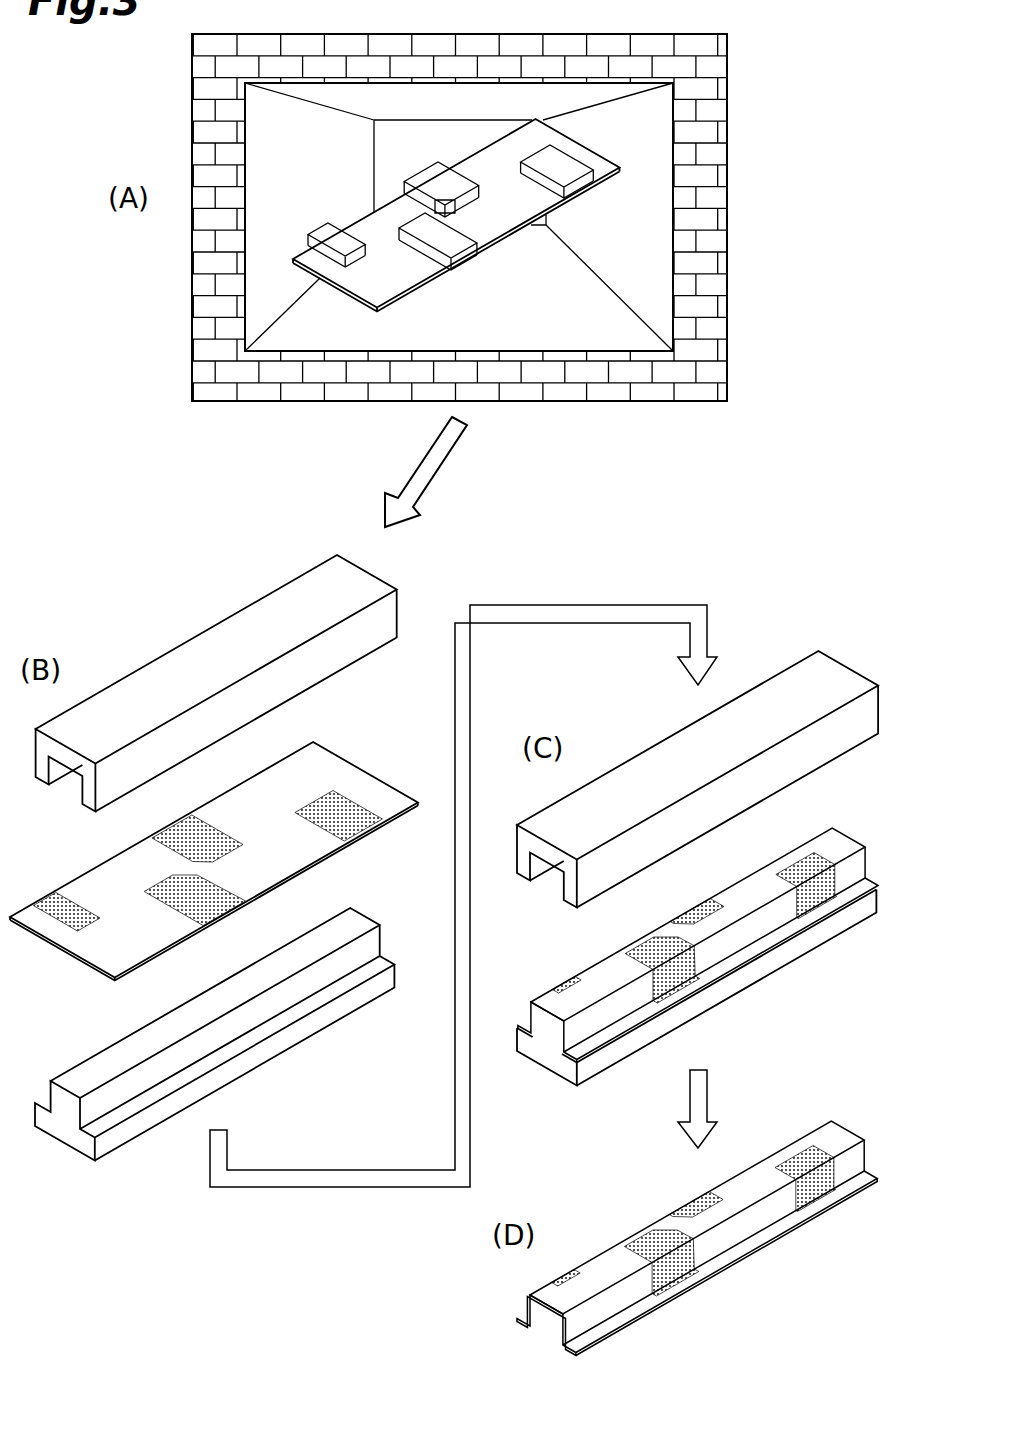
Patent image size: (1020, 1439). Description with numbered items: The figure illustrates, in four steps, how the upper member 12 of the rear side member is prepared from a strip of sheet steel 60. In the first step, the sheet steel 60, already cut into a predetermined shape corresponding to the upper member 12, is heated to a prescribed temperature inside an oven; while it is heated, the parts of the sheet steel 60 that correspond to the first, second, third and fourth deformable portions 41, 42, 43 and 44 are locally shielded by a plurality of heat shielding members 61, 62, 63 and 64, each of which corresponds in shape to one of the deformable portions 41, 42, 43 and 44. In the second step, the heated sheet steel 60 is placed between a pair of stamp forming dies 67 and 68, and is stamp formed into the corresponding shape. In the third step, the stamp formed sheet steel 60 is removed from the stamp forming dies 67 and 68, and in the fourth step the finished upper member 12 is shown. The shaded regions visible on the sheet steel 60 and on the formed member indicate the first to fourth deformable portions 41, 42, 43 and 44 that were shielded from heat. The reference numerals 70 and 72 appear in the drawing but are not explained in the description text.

The upper member 12 is at (837, 1140).
The first deformable portion 41 is at (825, 1210).
The second deformable portion 42 is at (693, 1200).
The third deformable portion 43 is at (682, 1285).
The fourth deformable portion 44 is at (562, 1278).
The sheet steel 60 is at (293, 863).
The heat shielding member 61 is at (570, 172).
The heat shielding member 62 is at (433, 175).
The heat shielding member 63 is at (460, 240).
The heat shielding member 64 is at (323, 235).
The stamp forming die 67 is at (835, 678).
The stamp forming die 68 is at (540, 1050).
The bent board on lower die 70 is at (857, 870).
The bent board 72 is at (857, 1163).